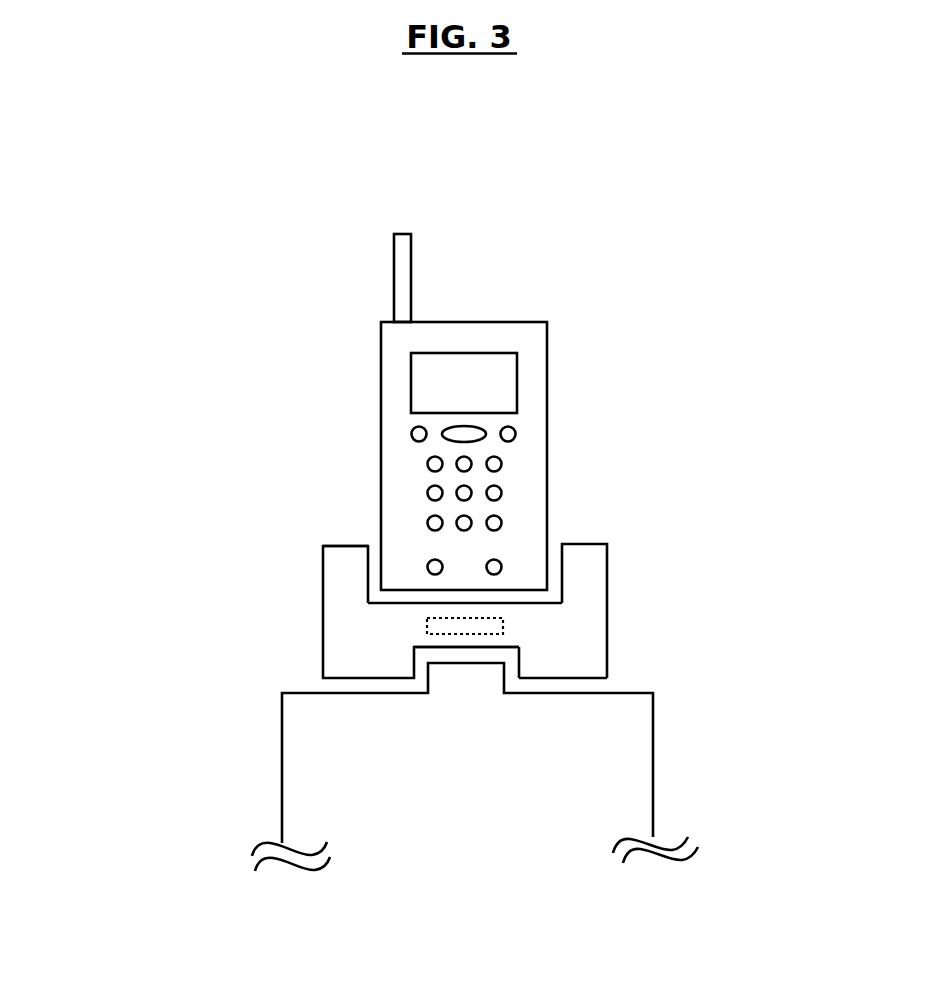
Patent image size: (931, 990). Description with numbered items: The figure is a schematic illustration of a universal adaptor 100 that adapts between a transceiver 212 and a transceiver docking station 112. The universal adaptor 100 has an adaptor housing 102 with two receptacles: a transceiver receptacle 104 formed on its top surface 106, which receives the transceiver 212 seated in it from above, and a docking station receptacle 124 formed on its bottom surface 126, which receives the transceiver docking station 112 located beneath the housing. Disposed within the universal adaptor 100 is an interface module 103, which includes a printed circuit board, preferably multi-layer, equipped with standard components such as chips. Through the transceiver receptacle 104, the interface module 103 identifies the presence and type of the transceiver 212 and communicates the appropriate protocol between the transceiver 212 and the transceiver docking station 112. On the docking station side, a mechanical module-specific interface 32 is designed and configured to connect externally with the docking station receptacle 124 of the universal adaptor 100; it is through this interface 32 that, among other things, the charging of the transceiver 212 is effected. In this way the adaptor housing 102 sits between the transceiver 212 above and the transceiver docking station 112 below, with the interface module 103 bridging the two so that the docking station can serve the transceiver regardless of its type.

The universal adaptor 100 is at (258, 588).
The transceiver 212 is at (530, 338).
The adaptor housing 102 is at (592, 587).
The top surface 106 is at (335, 545).
The transceiver receptacle 104 is at (395, 606).
The interface module 103 is at (428, 635).
The docking station receptacle 124 is at (488, 646).
The mechanical module-specific interface 32 is at (518, 662).
The bottom surface 126 is at (563, 677).
The transceiver docking station 112 is at (355, 781).